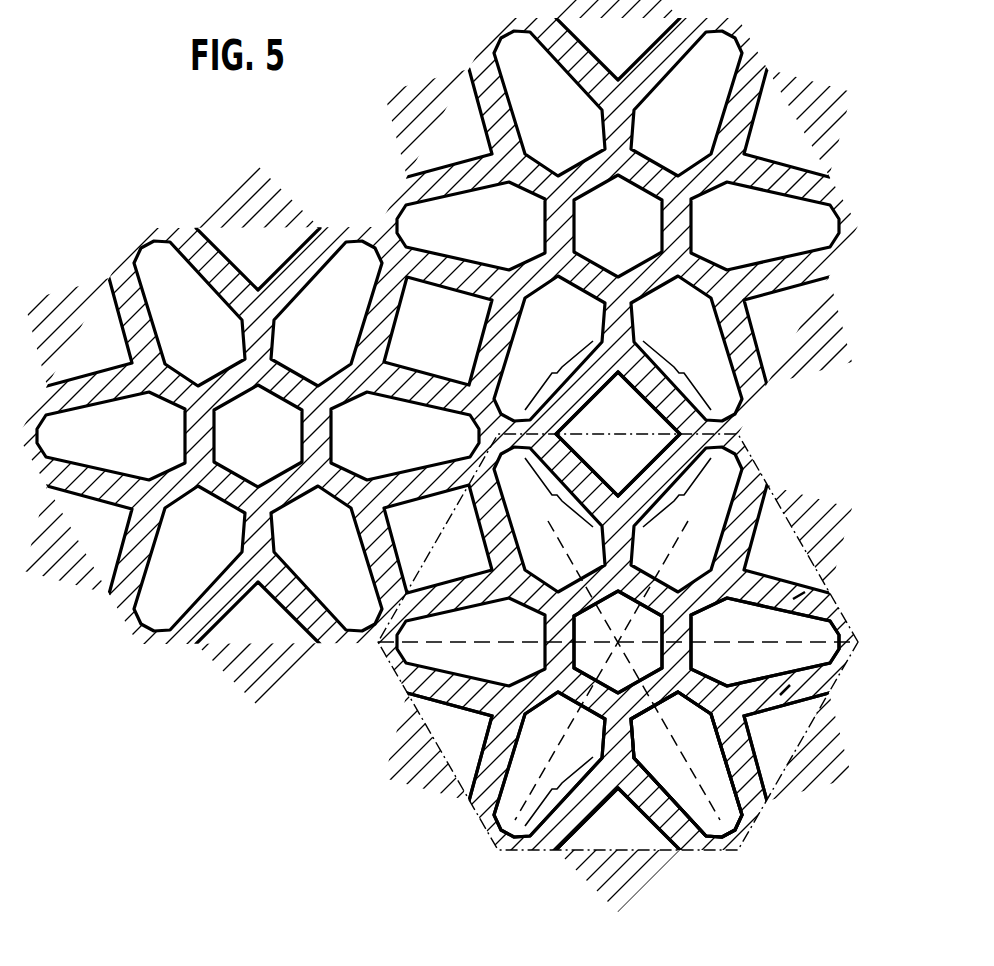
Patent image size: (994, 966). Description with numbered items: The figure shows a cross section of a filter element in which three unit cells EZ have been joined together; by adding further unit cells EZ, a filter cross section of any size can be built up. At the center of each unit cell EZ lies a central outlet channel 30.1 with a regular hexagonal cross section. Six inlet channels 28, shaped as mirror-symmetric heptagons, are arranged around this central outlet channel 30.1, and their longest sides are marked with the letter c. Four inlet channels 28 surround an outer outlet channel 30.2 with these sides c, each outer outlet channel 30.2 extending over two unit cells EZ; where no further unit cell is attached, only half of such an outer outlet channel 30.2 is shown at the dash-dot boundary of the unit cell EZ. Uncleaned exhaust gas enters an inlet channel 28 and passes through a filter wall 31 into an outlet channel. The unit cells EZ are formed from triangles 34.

The inlet channel 28 is at (500, 848).
The central outlet channel 30.1 is at (640, 657).
The outer outlet channel 30.2 is at (656, 410).
The filter wall 31 is at (779, 690).
The triangle 34 is at (661, 824).
The unit cell EZ is at (372, 686).
The longest side of the heptagon C is at (618, 583).